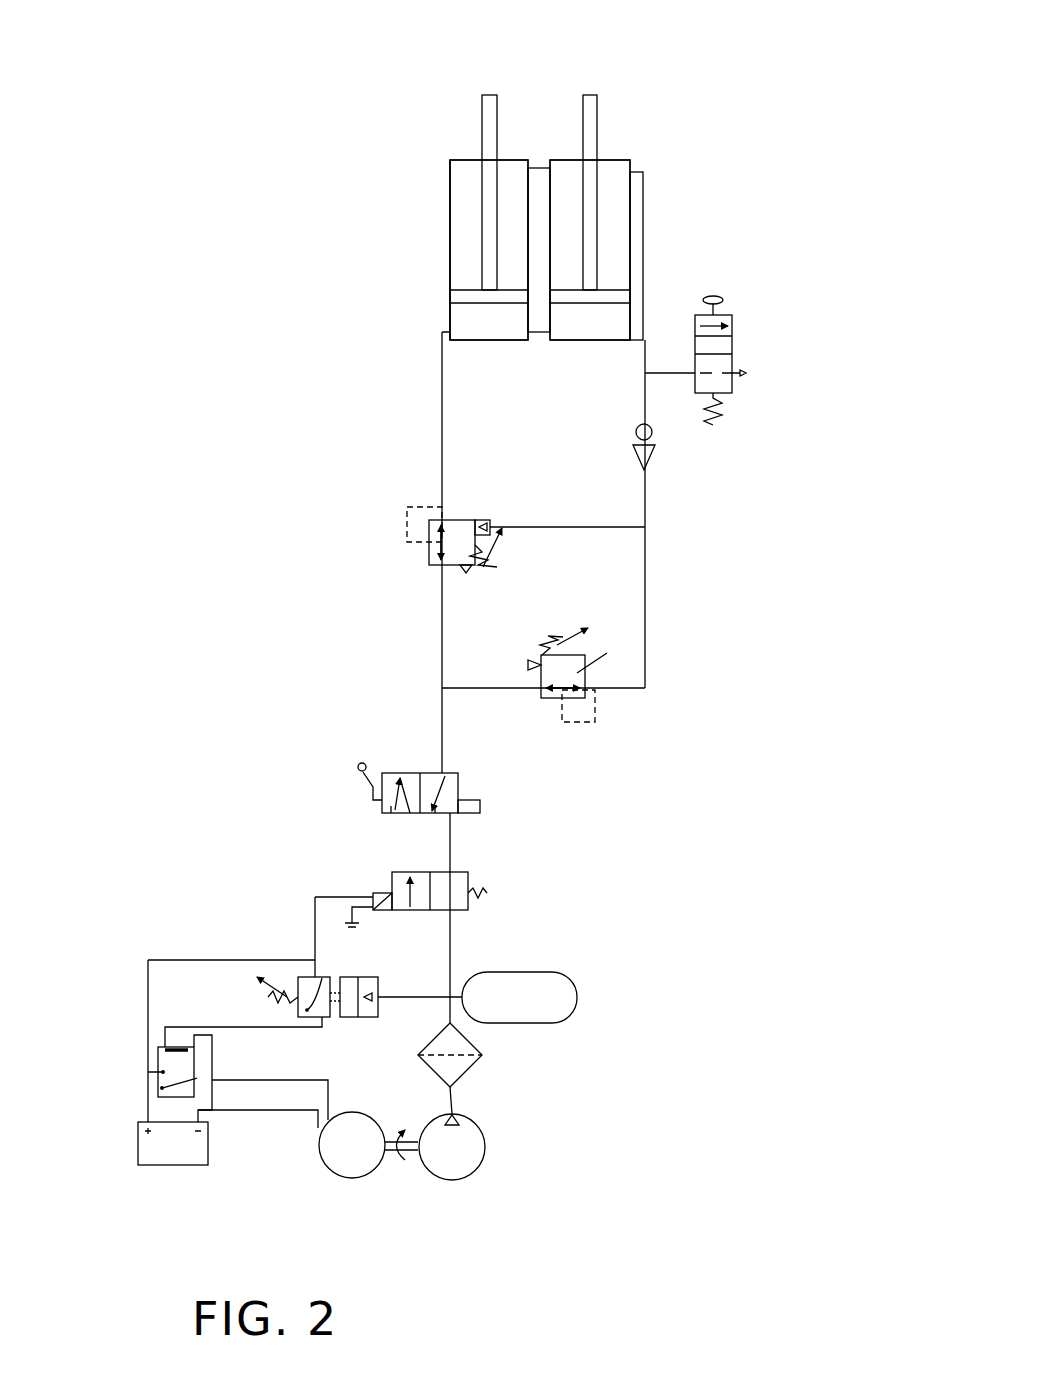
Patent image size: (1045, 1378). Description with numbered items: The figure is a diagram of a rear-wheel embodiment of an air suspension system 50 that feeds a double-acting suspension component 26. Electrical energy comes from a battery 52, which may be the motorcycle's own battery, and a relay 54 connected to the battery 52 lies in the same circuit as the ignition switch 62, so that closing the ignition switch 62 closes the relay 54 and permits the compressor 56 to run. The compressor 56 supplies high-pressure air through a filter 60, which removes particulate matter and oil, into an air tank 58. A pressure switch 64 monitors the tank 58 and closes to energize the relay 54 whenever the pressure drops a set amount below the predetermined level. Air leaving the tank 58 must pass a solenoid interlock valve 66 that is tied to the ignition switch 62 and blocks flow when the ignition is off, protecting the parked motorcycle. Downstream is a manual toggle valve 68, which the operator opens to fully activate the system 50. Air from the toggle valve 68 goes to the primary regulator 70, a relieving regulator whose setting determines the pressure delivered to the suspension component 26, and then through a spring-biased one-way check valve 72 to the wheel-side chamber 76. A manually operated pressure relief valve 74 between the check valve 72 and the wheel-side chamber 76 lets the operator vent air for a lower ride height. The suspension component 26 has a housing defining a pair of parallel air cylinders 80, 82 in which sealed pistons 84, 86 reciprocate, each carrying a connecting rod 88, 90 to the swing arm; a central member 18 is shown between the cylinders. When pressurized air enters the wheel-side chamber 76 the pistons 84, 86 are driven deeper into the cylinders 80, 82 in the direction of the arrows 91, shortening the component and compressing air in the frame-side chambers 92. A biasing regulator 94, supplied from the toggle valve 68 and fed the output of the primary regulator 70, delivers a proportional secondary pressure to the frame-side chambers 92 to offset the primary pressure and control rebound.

The central member 18 is at (540, 167).
The suspension component 26 is at (631, 159).
The system 50 is at (295, 747).
The battery 52 is at (137, 1140).
The relay 54 is at (185, 1073).
The compressor 56 is at (333, 1162).
The air tank 58 is at (558, 977).
The filter 60 is at (472, 1063).
The ignition switch 62 is at (172, 958).
The pressure switch 64 is at (350, 985).
The solenoid interlock valve 66 is at (460, 888).
The toggle valve 68 is at (455, 790).
The primary regulator 70 is at (552, 703).
The one-way check valve 72 is at (637, 447).
The pressure relief valve 74 is at (727, 330).
The wheel-side chamber 76 is at (468, 203).
The air cylinder 80 is at (448, 223).
The air cylinder 82 is at (631, 257).
The piston 84 is at (470, 293).
The piston 86 is at (618, 297).
The connecting rod 88 is at (490, 95).
The connecting rod 90 is at (590, 95).
The arrows 91 is at (512, 236).
The frame-side chambers 92 is at (488, 327).
The biasing regulator 94 is at (447, 540).